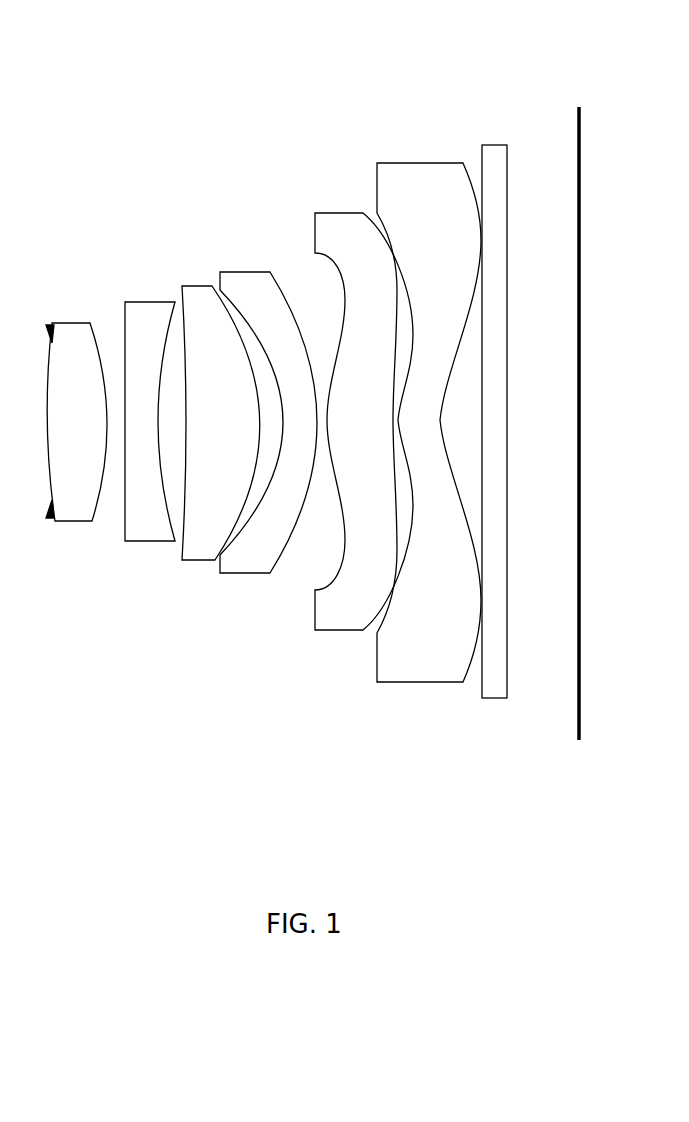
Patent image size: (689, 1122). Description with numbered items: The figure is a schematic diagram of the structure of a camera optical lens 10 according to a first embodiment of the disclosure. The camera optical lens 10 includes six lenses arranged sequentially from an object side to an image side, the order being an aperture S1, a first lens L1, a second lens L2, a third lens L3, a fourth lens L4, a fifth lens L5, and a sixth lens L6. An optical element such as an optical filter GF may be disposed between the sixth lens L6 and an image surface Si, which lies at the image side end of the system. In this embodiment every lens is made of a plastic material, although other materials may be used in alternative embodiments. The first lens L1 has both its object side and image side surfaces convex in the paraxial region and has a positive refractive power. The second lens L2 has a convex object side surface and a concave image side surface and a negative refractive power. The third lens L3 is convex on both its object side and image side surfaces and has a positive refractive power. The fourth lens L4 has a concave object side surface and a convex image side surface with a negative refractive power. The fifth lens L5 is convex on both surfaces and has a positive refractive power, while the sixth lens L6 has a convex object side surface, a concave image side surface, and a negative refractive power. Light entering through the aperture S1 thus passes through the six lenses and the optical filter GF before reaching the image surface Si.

The camera optical lens 10 is at (331, 31).
The aperture S1 is at (40, 419).
The first lens L1 is at (77, 409).
The second lens L2 is at (150, 408).
The third lens L3 is at (221, 412).
The fourth lens L4 is at (268, 410).
The fifth lens L5 is at (364, 410).
The sixth lens L6 is at (429, 412).
The optical filter GF is at (493, 409).
The image surface Si is at (583, 410).